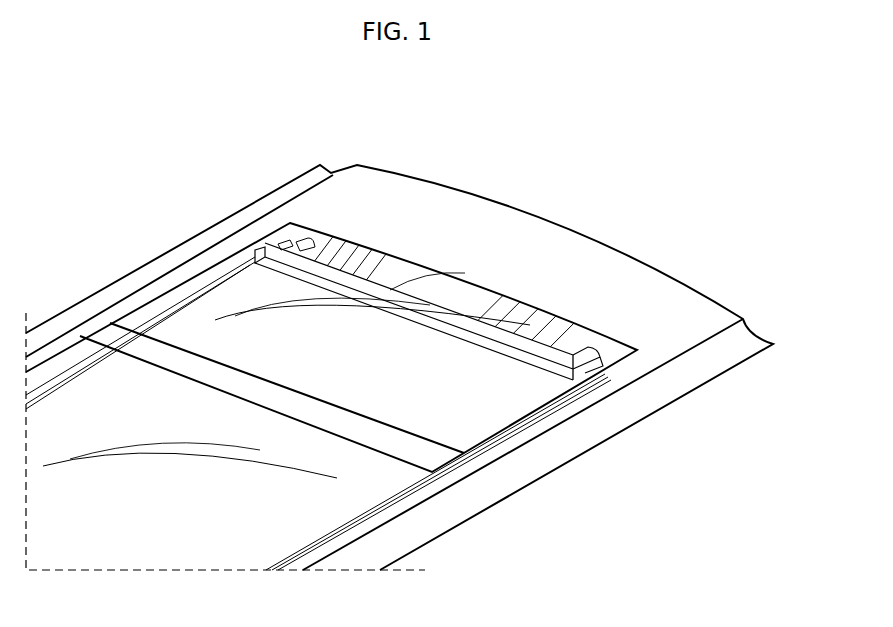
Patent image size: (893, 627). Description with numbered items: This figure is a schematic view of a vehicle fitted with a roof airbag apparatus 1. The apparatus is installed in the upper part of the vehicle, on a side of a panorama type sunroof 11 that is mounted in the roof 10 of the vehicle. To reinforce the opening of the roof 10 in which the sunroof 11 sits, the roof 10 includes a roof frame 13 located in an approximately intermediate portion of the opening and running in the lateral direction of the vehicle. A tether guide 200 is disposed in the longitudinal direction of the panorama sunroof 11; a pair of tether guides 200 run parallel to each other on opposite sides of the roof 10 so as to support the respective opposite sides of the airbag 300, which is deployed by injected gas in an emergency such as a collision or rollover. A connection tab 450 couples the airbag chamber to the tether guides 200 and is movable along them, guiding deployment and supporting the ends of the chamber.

The roof airbag apparatus 1 is at (303, 224).
The roof 10 is at (577, 223).
The panorama type sunroof 11 is at (87, 398).
The roof frame 13 is at (193, 362).
The tether guide 200 is at (217, 286).
The airbag 300 is at (387, 290).
The connection tab 450 is at (593, 370).